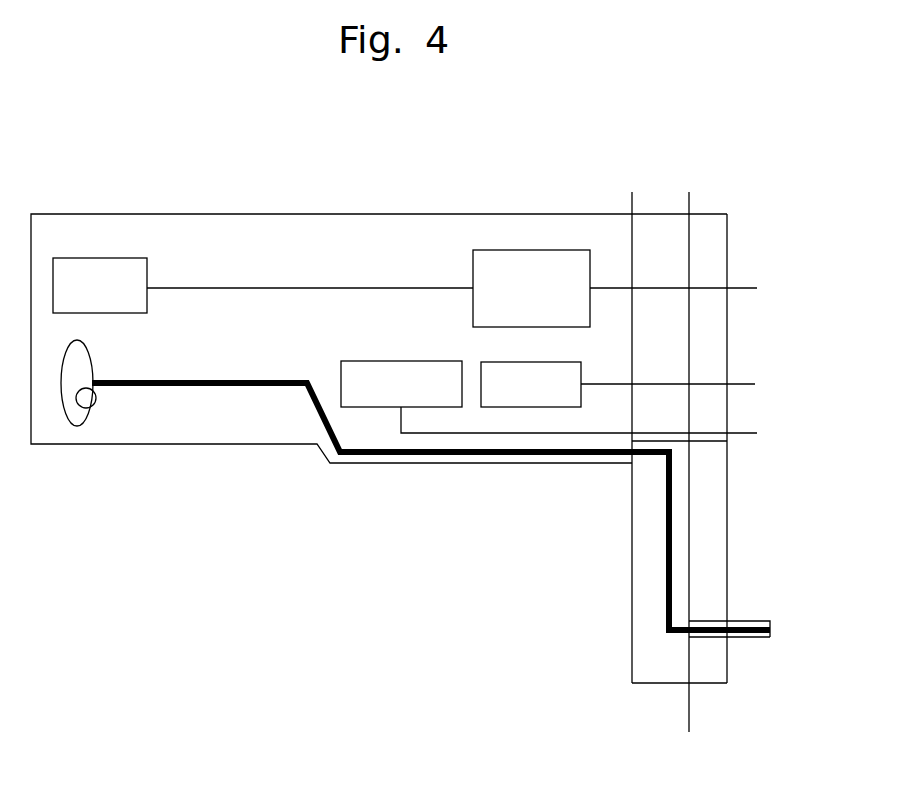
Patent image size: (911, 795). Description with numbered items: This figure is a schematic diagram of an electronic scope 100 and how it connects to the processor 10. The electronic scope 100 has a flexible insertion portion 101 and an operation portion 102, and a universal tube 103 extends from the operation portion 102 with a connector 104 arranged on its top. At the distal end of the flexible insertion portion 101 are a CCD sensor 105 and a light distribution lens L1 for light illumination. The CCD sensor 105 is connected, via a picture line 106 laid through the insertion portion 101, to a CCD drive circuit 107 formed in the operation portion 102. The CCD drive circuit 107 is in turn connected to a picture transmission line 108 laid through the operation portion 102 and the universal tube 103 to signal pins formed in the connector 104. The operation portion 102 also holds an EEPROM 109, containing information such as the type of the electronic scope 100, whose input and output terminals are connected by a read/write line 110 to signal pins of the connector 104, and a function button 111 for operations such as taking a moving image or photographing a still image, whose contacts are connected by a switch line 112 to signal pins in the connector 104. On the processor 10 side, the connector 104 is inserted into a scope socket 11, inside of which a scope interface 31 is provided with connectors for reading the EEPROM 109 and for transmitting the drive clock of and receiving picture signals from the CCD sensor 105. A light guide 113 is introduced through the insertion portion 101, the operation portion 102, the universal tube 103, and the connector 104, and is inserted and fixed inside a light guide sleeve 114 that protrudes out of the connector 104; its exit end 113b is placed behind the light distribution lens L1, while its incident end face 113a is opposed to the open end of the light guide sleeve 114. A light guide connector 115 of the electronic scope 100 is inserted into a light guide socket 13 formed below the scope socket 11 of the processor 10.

The electronic scope 100 is at (331, 290).
The flexible insertion portion 101 is at (150, 214).
The operation portion 102 is at (487, 214).
The universal tube 103 is at (605, 214).
The connector 104 is at (688, 235).
The CCD sensor 105 is at (87, 258).
The picture line 106 is at (262, 288).
The CCD drive circuit 107 is at (535, 250).
The picture transmission line 108 is at (648, 288).
The EEPROM 109 is at (530, 407).
The read/write line 110 is at (608, 384).
The function button 111 is at (391, 407).
The switch line 112 is at (615, 433).
The light guide 113 is at (265, 387).
The incident end face 113a is at (770, 630).
The exit end 113b is at (90, 408).
The light guide sleeve 114 is at (740, 637).
The light guide connector 115 is at (632, 665).
The processor 10 is at (719, 436).
The scope socket 11 is at (689, 200).
The light guide socket 13 is at (689, 642).
The scope interface 31 is at (727, 216).
The light distribution lens L1 is at (75, 425).